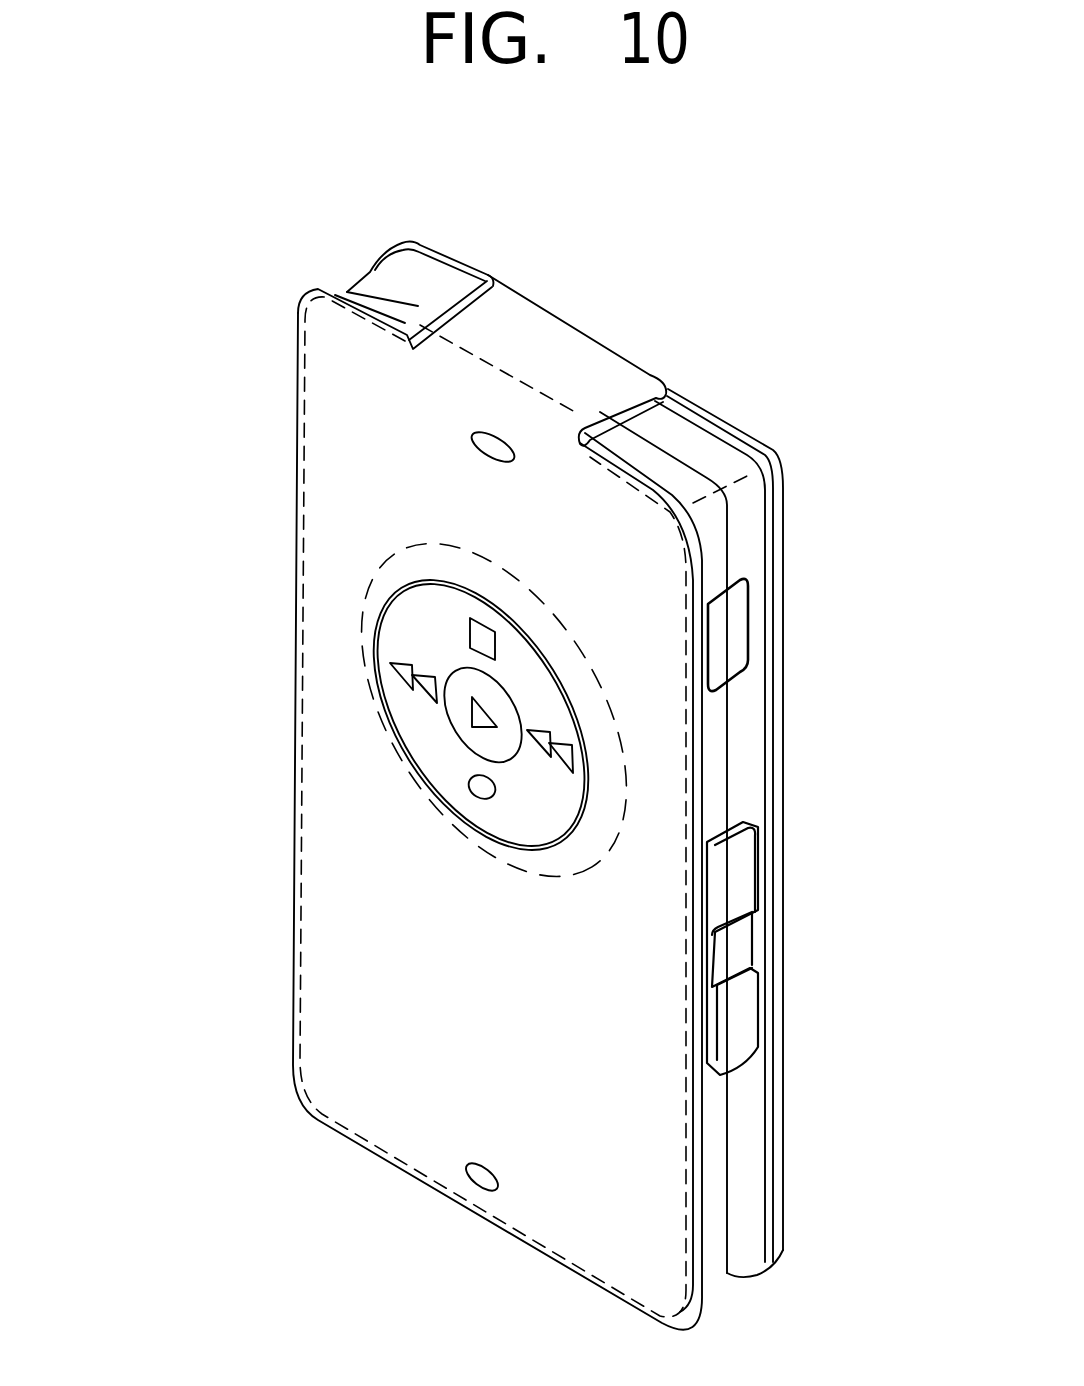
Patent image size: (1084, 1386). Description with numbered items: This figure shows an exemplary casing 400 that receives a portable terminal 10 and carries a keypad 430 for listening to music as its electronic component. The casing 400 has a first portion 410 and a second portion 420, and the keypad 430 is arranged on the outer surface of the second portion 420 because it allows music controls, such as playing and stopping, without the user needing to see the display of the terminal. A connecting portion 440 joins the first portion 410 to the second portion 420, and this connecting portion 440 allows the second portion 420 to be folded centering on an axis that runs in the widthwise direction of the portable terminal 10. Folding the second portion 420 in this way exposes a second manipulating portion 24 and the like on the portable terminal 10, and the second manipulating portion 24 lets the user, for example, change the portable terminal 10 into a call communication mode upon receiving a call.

The casing 400 is at (210, 727).
The first portion 410 is at (775, 662).
The second portion 420 is at (658, 718).
The keypad 430 is at (373, 657).
The connecting portion 440 is at (562, 343).
The second manipulating portion 24 is at (748, 870).
The portable terminal 10 is at (745, 1117).